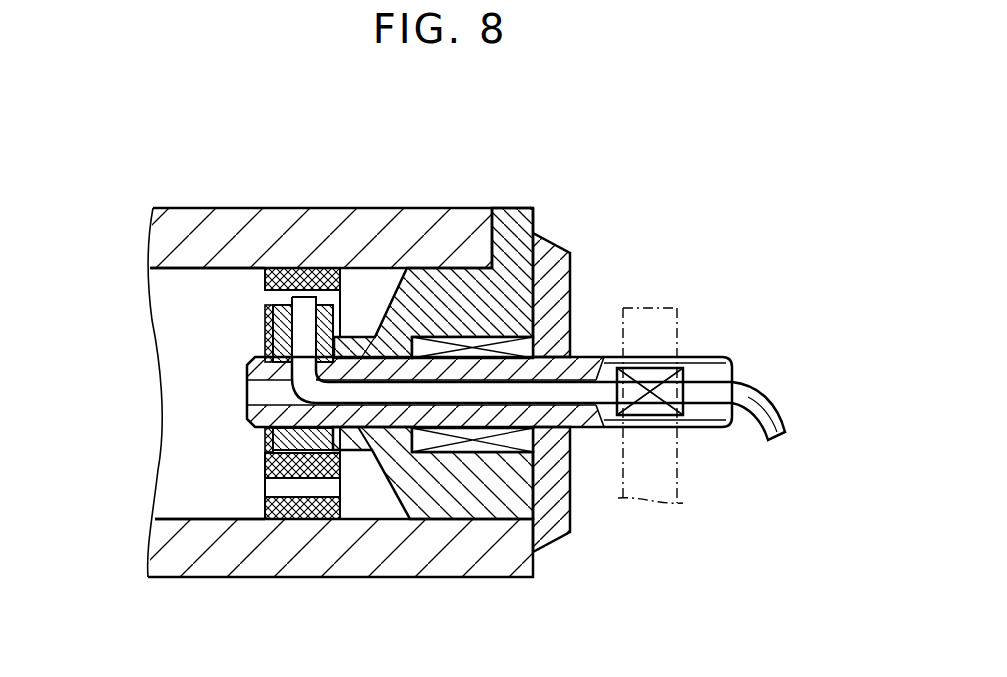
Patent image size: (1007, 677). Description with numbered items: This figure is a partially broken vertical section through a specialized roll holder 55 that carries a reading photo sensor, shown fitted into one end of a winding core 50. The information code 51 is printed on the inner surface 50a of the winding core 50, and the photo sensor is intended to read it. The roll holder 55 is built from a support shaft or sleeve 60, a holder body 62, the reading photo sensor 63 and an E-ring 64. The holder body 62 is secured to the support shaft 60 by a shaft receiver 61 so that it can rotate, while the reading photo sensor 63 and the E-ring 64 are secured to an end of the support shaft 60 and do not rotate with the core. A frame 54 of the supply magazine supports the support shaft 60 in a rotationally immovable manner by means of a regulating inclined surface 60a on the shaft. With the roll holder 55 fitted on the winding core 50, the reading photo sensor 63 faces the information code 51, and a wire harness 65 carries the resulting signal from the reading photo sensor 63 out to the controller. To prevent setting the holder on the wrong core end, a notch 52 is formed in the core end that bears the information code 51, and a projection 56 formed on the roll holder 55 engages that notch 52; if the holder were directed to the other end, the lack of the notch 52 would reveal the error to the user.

The winding core 50 is at (258, 208).
The inner surface 50a is at (165, 302).
The information code 51 is at (240, 290).
The notch 52 is at (506, 240).
The frame 54 is at (641, 500).
The roll holder 55 is at (615, 272).
The projection 56 is at (514, 246).
The support shaft 60 is at (714, 428).
The regulating inclined surface 60a is at (685, 367).
The shaft receiver 61 is at (474, 447).
The holder body 62 is at (425, 498).
The reading photo sensor 63 is at (300, 327).
The E-ring 64 is at (265, 430).
The wire harness 65 is at (785, 413).